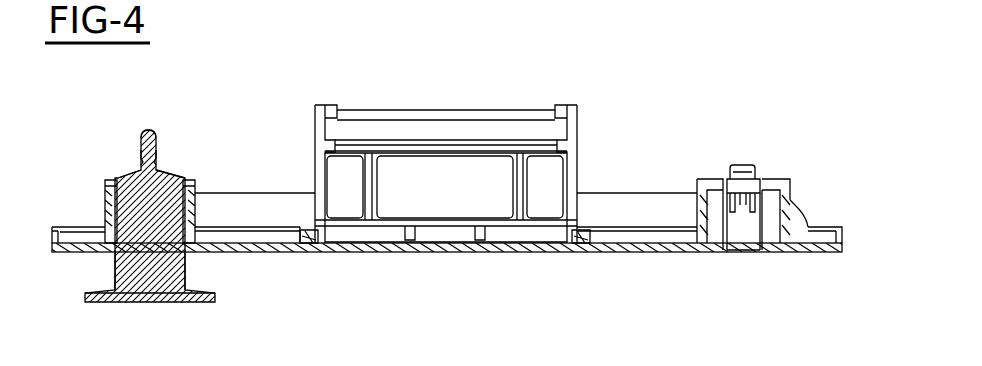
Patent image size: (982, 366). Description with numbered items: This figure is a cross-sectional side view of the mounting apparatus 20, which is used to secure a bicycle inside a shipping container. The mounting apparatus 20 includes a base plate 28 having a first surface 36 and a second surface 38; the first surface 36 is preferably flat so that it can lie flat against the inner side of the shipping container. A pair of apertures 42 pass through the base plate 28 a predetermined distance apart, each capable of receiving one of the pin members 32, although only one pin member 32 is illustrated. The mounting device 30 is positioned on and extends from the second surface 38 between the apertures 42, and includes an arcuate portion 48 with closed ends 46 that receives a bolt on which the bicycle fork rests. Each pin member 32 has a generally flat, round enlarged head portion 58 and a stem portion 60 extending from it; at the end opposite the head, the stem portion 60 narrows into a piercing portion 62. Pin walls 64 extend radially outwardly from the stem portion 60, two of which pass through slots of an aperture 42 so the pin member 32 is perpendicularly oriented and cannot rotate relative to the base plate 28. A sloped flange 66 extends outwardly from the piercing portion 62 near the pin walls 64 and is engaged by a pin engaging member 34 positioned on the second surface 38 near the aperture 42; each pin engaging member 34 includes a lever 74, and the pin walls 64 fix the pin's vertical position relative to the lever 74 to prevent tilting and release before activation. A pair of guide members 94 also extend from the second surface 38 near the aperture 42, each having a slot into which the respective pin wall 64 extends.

The mounting apparatus 20 is at (660, 67).
The base plate 28 is at (793, 253).
The mounting device 30 is at (465, 113).
The pin member 32 is at (138, 283).
The pin engaging member 34 is at (743, 165).
The first surface 36 is at (413, 252).
The second surface 38 is at (235, 242).
The aperture 42 is at (740, 240).
The closed end 46 is at (578, 118).
The arcuate portion 48 is at (388, 110).
The enlarged head portion 58 is at (190, 302).
The stem portion 60 is at (157, 157).
The piercing portion 62 is at (153, 137).
The pin wall 64 is at (125, 270).
The sloped flange 66 is at (140, 170).
The lever 74 is at (765, 178).
The guide member 94 is at (85, 243).